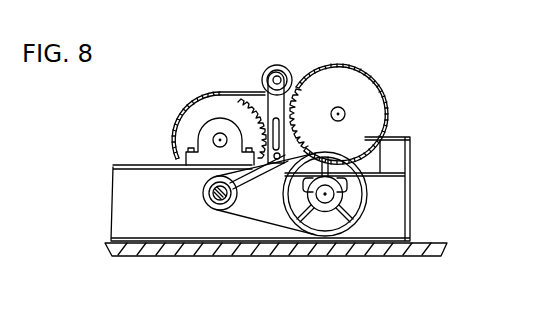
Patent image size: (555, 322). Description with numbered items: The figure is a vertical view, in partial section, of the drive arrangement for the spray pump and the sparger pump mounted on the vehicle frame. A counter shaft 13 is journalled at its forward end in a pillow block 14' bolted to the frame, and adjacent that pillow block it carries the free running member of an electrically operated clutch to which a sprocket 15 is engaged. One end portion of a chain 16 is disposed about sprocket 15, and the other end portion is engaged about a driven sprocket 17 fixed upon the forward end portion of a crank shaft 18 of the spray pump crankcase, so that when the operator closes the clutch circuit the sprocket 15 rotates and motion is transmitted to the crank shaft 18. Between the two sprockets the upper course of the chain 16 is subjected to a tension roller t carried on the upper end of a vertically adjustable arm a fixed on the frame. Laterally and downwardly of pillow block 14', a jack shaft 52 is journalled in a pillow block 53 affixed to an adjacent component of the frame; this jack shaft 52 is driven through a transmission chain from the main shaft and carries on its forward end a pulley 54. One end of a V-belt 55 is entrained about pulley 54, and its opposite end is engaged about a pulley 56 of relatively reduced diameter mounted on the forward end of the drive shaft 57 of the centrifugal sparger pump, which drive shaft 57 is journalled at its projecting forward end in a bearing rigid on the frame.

The counter shaft 13 is at (212, 140).
The forward pillow block 14' is at (157, 145).
The sprocket 15 is at (182, 112).
The chain 16 is at (217, 92).
The driven sprocket 17 is at (362, 95).
The crank shaft 18 is at (346, 113).
The jack shaft 52 is at (334, 194).
The pillow block 53 is at (373, 184).
The pulley 54 is at (402, 251).
The V-belt 55 is at (292, 237).
The pulley 56 is at (233, 212).
The drive shaft 57 is at (210, 196).
The vertically adjustable arm a is at (289, 73).
The housing b is at (390, 177).
The tension roller t is at (283, 66).